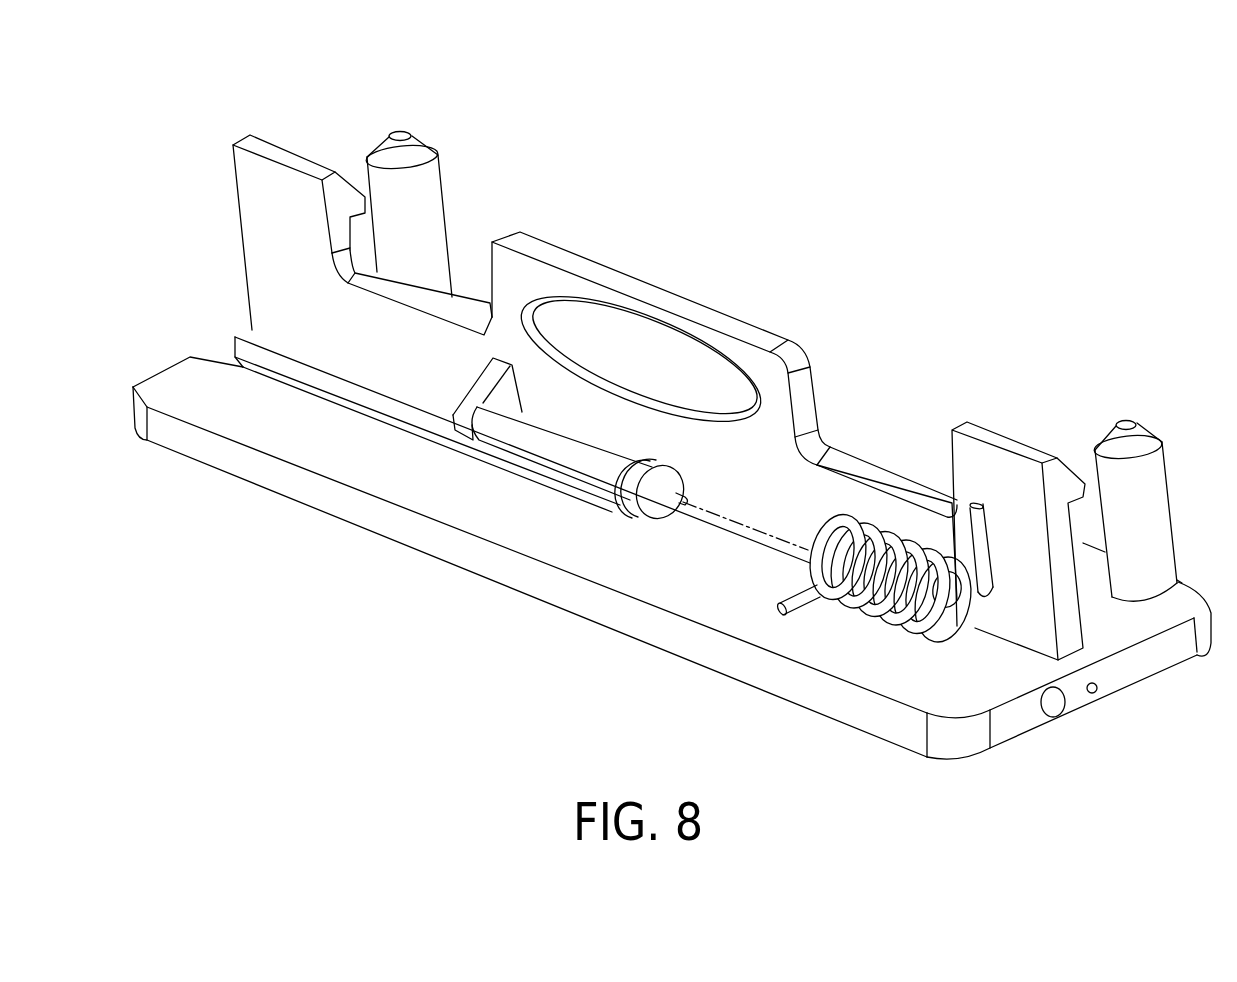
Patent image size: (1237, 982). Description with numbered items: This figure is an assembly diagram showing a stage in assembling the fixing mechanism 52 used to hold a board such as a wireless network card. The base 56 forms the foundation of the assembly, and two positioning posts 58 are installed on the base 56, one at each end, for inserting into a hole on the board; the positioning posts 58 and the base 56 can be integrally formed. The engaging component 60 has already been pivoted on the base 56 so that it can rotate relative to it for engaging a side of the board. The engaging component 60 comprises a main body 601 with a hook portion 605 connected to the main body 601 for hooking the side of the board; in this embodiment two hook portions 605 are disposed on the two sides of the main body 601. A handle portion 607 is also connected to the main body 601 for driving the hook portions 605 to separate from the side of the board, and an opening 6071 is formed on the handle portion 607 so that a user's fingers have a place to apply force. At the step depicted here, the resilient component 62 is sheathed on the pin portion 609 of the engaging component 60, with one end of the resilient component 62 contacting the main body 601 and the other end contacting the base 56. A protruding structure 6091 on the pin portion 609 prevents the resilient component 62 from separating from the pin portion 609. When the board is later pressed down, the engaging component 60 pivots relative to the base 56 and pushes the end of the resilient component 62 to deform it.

The fixing mechanism 52 is at (928, 175).
The base 56 is at (1155, 657).
The positioning post 58 is at (430, 203).
The engaging component 60 is at (646, 455).
The main body 601 is at (855, 495).
The hook portion 605 is at (292, 150).
The handle portion 607 is at (661, 326).
The opening 6071 is at (593, 332).
The pin portion 609 is at (621, 527).
The protruding structure 6091 is at (658, 505).
The resilient component 62 is at (893, 607).